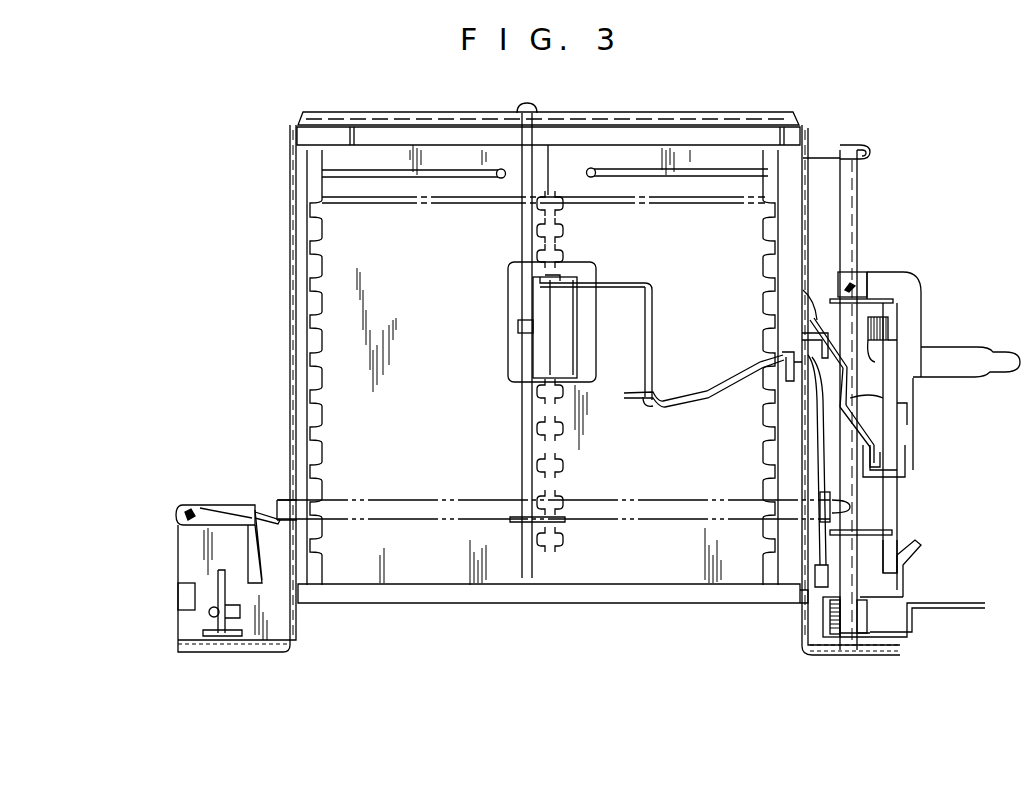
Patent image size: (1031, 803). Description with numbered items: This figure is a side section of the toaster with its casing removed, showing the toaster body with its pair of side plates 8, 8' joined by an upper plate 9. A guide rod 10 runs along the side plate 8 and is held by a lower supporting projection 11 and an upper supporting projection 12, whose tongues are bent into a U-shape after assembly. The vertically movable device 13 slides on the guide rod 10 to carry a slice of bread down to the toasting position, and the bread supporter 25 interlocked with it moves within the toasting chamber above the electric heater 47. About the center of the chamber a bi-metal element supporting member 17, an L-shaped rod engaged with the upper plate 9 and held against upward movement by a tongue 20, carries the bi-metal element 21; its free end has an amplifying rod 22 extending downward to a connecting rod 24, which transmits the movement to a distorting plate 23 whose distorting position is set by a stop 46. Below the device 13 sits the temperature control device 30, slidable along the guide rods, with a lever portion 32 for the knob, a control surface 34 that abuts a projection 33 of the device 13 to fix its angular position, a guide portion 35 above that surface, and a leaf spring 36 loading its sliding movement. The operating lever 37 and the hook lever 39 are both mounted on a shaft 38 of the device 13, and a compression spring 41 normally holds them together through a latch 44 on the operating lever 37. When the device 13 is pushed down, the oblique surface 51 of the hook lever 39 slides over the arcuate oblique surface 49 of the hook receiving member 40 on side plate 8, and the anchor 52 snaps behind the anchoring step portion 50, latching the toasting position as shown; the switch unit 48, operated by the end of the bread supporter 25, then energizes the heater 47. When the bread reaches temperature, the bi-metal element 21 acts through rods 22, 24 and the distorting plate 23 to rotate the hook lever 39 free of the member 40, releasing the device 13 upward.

The side plate 8 is at (831, 390).
The side plate 8' is at (250, 388).
The upper plate 9 is at (718, 122).
The guide rod 10 is at (858, 207).
The lower supporting projection 11 is at (830, 648).
The upper supporting projection 12 is at (862, 148).
The vertically movable device 13 is at (890, 510).
The bi-metal element supporting member 17 is at (538, 225).
The tongue 20 is at (533, 112).
The bi-metal element 21 is at (612, 280).
The amplifying rod 22 is at (652, 345).
The distorting plate 23 is at (825, 472).
The connecting rod 24 is at (695, 400).
The bread supporter 25 is at (645, 519).
The temperature control device 30 is at (823, 620).
The lever portion 32 is at (945, 605).
The projection 33 is at (892, 540).
The control surface 34 is at (905, 580).
The guide portion 35 is at (907, 555).
The leaf spring 36 is at (872, 634).
The operating lever 37 is at (960, 347).
The shaft 38 is at (849, 283).
The hook lever 39 is at (872, 360).
The hook receiving member 40 is at (803, 334).
The compression spring 41 is at (887, 298).
The latch 44 is at (903, 480).
The stop 46 is at (786, 352).
The electric heater 47 is at (398, 573).
The switch unit 48 is at (228, 514).
The arcuate oblique surface 49 is at (803, 294).
The anchoring step portion 50 is at (850, 400).
The oblique surface 51 is at (860, 442).
The anchor 52 is at (852, 420).